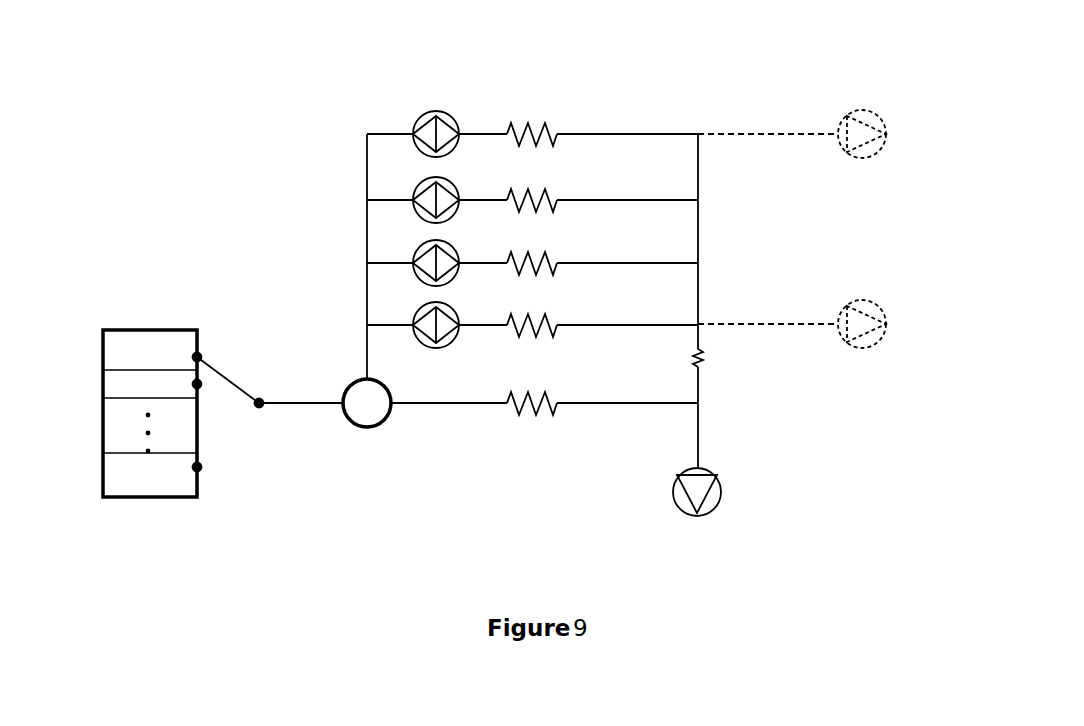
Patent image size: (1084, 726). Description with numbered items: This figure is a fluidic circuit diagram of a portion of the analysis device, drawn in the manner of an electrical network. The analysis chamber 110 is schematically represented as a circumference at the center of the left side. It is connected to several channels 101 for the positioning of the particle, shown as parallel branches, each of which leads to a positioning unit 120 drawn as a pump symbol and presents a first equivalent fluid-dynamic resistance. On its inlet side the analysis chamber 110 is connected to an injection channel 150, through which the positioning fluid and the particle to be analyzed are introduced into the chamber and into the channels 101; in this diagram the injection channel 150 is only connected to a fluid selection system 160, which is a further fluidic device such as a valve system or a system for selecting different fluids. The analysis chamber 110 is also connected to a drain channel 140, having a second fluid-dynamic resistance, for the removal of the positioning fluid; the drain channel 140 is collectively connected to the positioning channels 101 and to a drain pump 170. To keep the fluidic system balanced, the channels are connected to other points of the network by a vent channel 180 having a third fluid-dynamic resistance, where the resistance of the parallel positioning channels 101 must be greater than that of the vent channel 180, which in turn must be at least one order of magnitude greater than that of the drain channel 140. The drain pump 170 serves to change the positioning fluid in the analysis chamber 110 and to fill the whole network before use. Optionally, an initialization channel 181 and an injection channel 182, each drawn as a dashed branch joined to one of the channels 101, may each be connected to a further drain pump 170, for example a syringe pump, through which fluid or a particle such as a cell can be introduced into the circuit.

The channel 101 is at (603, 117).
The analysis chamber 110 is at (352, 433).
The positioning unit 120 is at (441, 110).
The drain channel 140 is at (502, 410).
The injection channel 150 is at (267, 398).
The fluid selection system 160 is at (173, 347).
The drain pump 170 is at (846, 118).
The vent channel 180 is at (712, 378).
The initialization channel 181 is at (785, 128).
The injection channel 182 is at (783, 318).